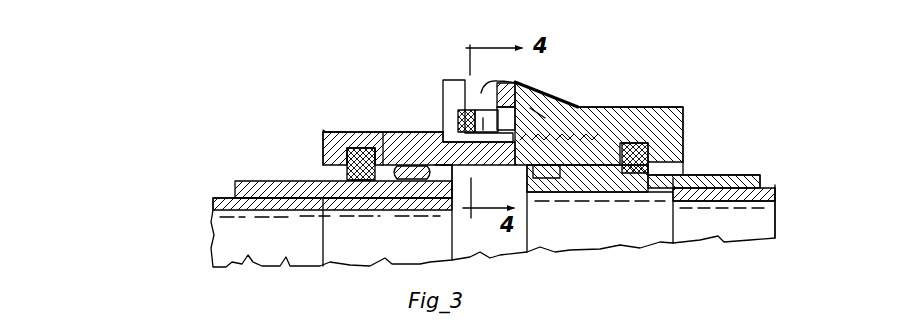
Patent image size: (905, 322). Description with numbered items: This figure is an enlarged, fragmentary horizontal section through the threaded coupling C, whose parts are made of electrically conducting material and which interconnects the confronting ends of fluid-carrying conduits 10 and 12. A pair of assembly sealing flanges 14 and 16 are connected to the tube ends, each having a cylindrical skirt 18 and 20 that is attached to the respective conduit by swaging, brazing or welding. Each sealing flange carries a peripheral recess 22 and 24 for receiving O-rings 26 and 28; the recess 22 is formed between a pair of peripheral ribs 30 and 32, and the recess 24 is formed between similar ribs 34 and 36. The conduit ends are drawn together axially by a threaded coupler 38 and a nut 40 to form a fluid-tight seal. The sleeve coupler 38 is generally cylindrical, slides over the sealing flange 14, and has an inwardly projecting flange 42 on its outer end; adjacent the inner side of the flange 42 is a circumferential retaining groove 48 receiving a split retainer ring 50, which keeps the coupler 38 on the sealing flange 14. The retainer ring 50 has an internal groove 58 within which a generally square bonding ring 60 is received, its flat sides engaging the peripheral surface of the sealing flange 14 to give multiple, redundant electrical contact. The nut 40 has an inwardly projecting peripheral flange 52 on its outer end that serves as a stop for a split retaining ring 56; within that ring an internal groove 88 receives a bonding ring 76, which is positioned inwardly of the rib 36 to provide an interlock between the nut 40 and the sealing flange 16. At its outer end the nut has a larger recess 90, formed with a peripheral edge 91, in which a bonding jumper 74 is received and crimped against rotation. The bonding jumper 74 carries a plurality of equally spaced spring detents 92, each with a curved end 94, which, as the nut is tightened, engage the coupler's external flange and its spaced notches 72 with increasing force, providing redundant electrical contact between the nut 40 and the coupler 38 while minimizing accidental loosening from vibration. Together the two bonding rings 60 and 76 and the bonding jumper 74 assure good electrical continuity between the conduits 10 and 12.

The conduit 10 is at (214, 233).
The conduit 12 is at (757, 222).
The sealing flange 14 is at (272, 163).
The sealing flange 16 is at (722, 176).
The cylindrical skirt 18 is at (238, 182).
The cylindrical skirt 20 is at (706, 170).
The peripheral recess 22 is at (403, 188).
The peripheral recess 24 is at (565, 200).
The O-ring 26 is at (441, 170).
The O-ring 28 is at (612, 192).
The peripheral rib 30 is at (386, 150).
The peripheral rib 32 is at (446, 163).
The rib 34 is at (545, 118).
The rib 36 is at (610, 125).
The threaded coupler 38 is at (323, 124).
The nut 40 is at (567, 87).
The inwardly projecting flange 42 is at (323, 152).
The circumferential retaining groove 48 is at (367, 160).
The retainer ring 50 is at (352, 150).
The inwardly projecting peripheral flange 52 is at (662, 174).
The retaining ring 56 is at (660, 140).
The internal groove 58 is at (322, 222).
The bonding ring 60 is at (361, 200).
The notches 72 is at (446, 100).
The bonding jumper 74 is at (517, 83).
The bonding ring 76 is at (641, 172).
The internal groove 88 is at (732, 195).
The recess 90 is at (548, 110).
The peripheral edge 91 is at (486, 118).
The spring detents 92 is at (485, 118).
The curved end 94 is at (460, 120).
The threaded coupling C is at (312, 97).